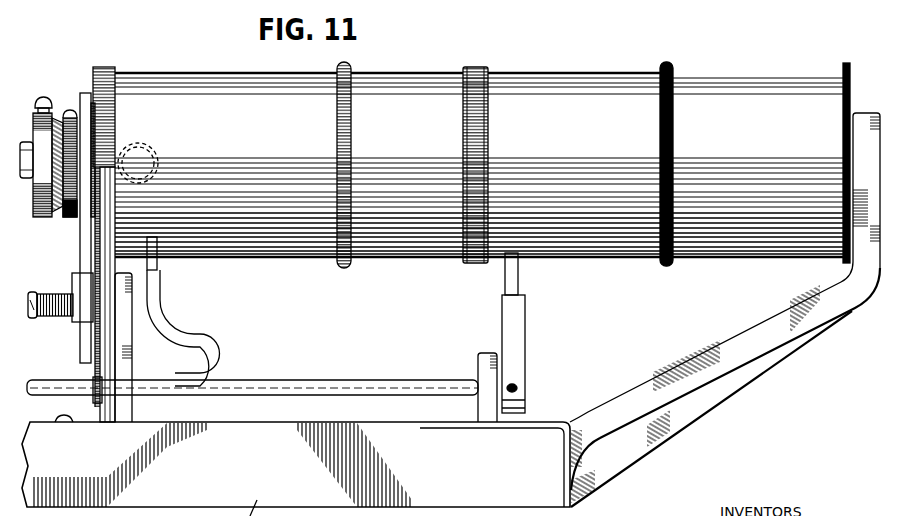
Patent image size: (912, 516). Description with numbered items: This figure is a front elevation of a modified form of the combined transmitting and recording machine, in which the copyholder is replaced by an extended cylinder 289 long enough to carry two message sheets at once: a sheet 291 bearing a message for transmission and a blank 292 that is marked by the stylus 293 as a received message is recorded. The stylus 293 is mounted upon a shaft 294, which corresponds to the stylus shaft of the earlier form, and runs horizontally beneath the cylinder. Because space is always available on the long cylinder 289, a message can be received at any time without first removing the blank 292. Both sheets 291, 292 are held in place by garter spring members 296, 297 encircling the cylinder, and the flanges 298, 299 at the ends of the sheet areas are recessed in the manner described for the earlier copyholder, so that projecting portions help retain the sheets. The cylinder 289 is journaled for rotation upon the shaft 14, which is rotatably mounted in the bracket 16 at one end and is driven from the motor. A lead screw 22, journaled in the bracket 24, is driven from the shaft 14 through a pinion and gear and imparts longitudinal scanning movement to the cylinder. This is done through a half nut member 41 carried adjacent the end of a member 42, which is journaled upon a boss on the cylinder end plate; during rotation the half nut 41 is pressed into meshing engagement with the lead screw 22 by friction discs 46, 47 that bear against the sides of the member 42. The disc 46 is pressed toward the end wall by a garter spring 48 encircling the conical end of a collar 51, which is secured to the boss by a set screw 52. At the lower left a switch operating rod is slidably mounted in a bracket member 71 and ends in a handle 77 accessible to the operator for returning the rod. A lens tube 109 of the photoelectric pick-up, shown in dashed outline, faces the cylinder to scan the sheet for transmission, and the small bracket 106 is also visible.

The shaft 14 is at (24, 147).
The bracket 16 is at (866, 113).
The lead screw 22 is at (31, 320).
The bracket 24 is at (125, 357).
The half nut member 41 is at (72, 280).
The member 42 is at (82, 360).
The friction disc 46 is at (95, 137).
The friction disc 47 is at (75, 110).
The garter spring 48 is at (67, 218).
The collar 51 is at (36, 216).
The set screw 52 is at (43, 97).
The bracket member 71 is at (110, 407).
The handle 77 is at (233, 357).
The bracket 106 is at (158, 263).
The lens tube 109 is at (153, 147).
The extended cylinder 289 is at (419, 66).
The sheet 291 is at (218, 75).
The blank 292 is at (578, 73).
The stylus 293 is at (519, 275).
The shaft 294 is at (352, 379).
The garter spring member 296 is at (352, 130).
The garter spring member 297 is at (673, 127).
The flange 298 is at (103, 67).
The flange 299 is at (475, 67).